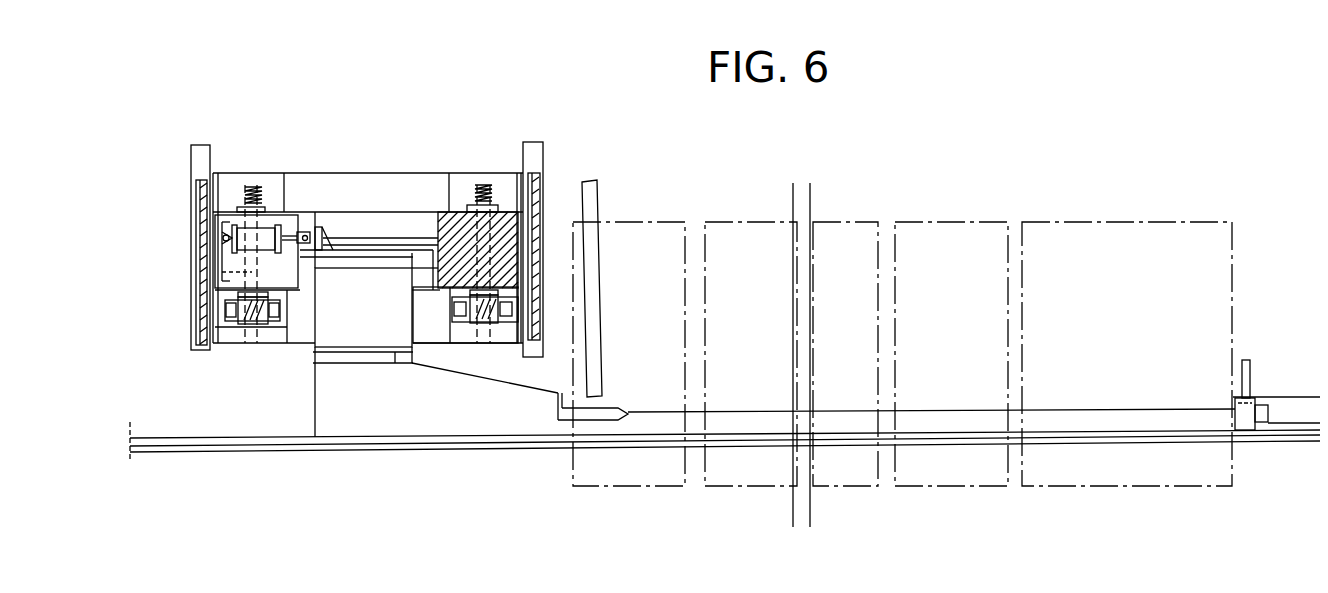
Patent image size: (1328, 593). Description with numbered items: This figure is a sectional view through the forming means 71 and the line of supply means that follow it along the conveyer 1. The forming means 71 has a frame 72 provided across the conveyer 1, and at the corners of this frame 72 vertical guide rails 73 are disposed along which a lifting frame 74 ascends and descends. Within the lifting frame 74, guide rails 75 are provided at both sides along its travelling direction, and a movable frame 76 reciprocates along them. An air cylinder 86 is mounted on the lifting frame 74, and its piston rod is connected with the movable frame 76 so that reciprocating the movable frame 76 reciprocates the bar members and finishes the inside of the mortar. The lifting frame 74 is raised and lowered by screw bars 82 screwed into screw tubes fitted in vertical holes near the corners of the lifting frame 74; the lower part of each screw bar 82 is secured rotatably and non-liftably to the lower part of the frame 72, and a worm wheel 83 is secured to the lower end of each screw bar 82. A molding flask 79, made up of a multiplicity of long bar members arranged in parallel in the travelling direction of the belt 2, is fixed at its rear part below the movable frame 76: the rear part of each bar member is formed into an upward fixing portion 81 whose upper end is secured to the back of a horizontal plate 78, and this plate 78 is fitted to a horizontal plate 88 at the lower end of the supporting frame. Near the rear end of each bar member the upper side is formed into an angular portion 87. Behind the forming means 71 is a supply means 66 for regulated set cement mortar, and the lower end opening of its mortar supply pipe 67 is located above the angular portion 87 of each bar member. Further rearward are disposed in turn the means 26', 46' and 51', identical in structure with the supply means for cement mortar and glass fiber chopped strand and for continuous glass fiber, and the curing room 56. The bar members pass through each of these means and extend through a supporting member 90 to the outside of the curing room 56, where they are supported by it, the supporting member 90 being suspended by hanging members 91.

The conveyer 1 is at (198, 452).
The belt 2 is at (265, 454).
The supply means for cement mortar and glass fiber chopped strand 26' is at (757, 355).
The supply means for continuous glass fiber 46' is at (845, 354).
The supply means for cement mortar and glass fiber chopped strand 51' is at (951, 354).
The curing room 56 is at (1146, 321).
The supply means for regulated set cement mortar 66 is at (658, 325).
The mortar supply pipe 67 is at (596, 377).
The forming means 71 is at (418, 173).
The frame 72 is at (195, 205).
The vertical guide rails 73 is at (219, 190).
The lifting frame 74 is at (452, 230).
The guide rails 75 is at (423, 253).
The movable frame 76 is at (348, 260).
The horizontal plate 78 is at (340, 362).
The molding flask 79 is at (362, 441).
The fixing portion 81 is at (458, 430).
The screw bar 82 is at (225, 268).
The worm wheel 83 is at (230, 327).
The air cylinder 86 is at (262, 244).
The angular portion 87 is at (603, 416).
The horizontal plate 88 is at (395, 353).
The supporting member 90 is at (1245, 420).
The hanging members 91 is at (1250, 372).